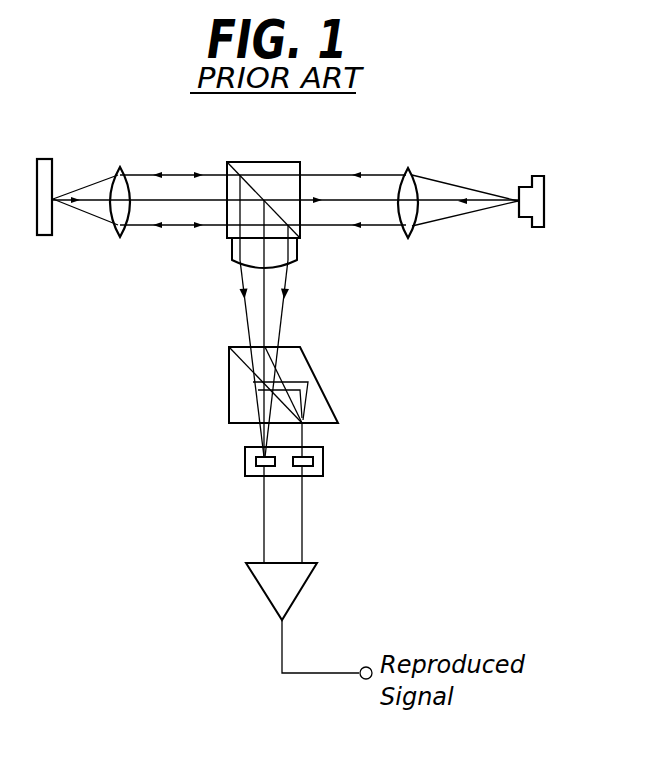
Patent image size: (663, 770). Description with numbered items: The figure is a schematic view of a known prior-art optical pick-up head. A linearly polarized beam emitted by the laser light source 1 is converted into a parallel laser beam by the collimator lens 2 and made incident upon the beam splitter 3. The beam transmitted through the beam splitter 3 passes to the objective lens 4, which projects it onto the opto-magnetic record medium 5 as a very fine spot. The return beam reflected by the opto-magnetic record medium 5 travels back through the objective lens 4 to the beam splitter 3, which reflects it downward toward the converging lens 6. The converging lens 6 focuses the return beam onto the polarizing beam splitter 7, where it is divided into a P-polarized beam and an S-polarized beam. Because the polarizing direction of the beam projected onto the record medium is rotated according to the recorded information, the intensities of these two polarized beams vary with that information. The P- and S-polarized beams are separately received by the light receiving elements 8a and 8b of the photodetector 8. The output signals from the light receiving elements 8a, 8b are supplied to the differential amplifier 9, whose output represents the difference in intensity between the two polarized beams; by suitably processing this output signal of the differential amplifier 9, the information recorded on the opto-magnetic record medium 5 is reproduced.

The laser light source 1 is at (537, 176).
The collimator lens 2 is at (408, 168).
The beam splitter 3 is at (267, 160).
The objective lens 4 is at (120, 167).
The opto-magnetic record medium 5 is at (44, 159).
The converging lens 6 is at (297, 258).
The polarizing beam splitter 7 is at (320, 388).
The photodetector 8 is at (323, 456).
The light receiving element 8a is at (255, 467).
The light receiving element 8b is at (308, 468).
The differential amplifier 9 is at (311, 585).